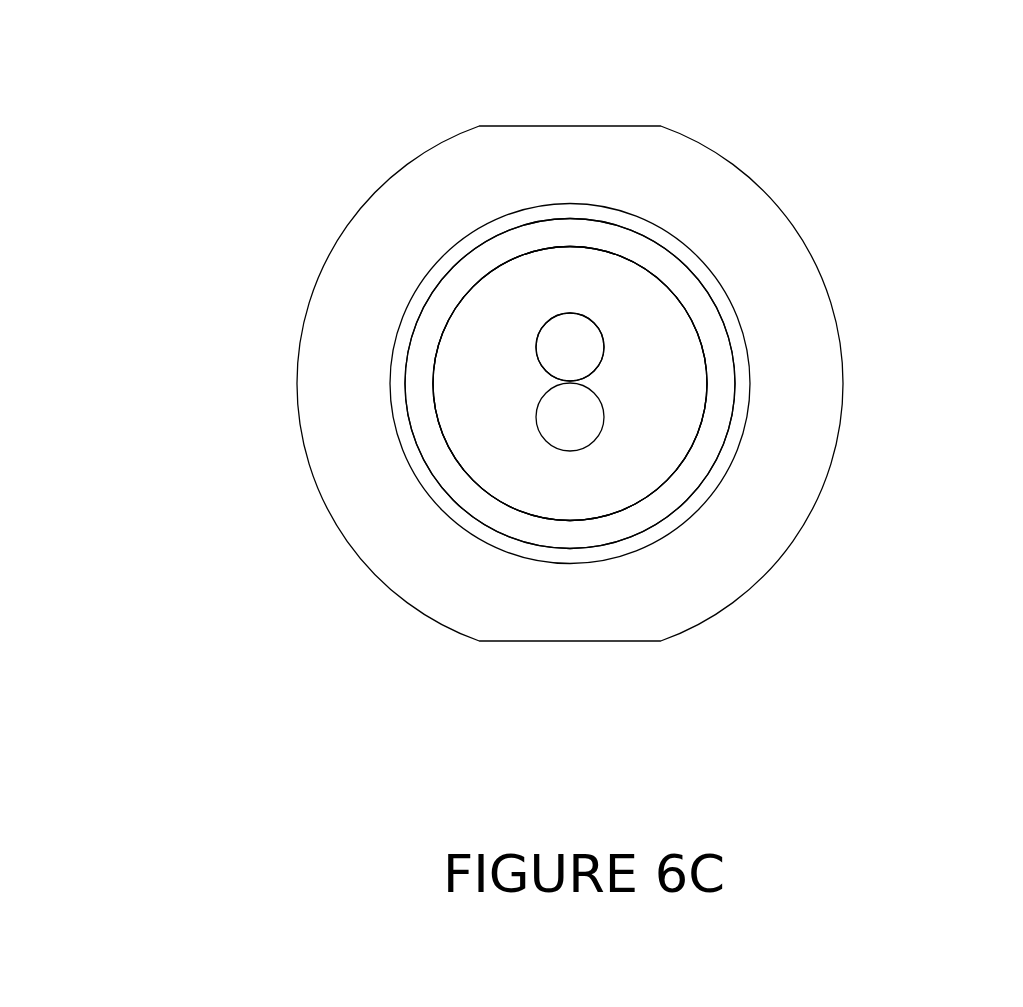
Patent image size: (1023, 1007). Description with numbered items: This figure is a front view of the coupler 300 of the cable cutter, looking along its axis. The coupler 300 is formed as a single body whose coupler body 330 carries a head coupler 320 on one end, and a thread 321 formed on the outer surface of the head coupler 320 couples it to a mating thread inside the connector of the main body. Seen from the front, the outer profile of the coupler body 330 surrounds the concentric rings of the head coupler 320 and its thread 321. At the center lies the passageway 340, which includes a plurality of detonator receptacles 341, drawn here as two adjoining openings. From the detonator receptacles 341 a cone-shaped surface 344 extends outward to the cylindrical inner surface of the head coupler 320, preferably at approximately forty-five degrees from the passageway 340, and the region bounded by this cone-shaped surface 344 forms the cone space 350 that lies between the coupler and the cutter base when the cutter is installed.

The coupler 300 is at (542, 358).
The coupler body 330 is at (343, 281).
The thread 321 is at (405, 414).
The head coupler 320 is at (444, 463).
The cone-shaped surface 344 is at (655, 433).
The cone space 350 is at (625, 482).
The passageway 340 is at (605, 343).
The detonator receptacles 341 is at (569, 340).